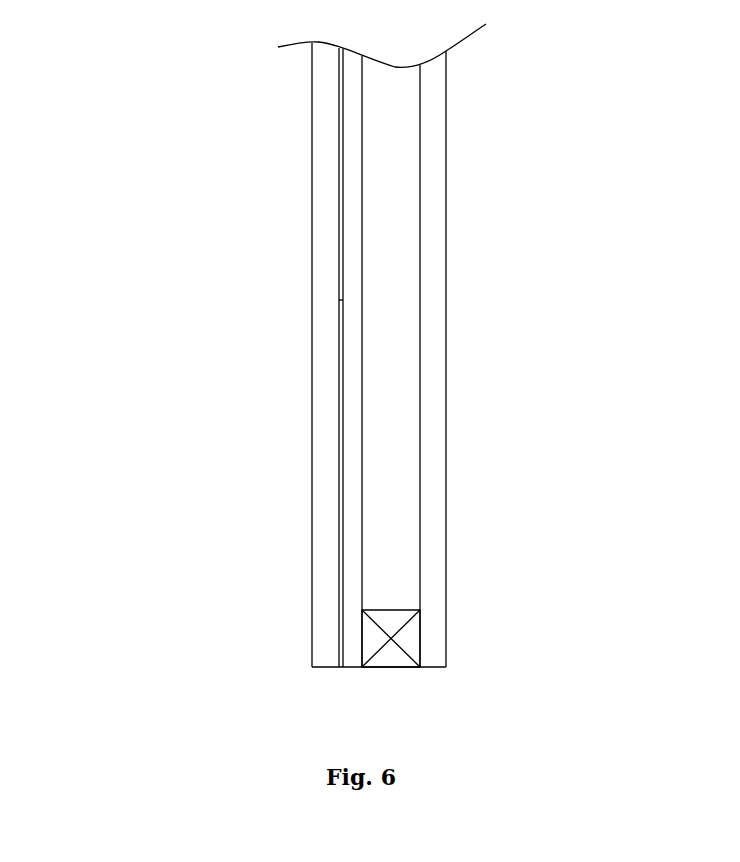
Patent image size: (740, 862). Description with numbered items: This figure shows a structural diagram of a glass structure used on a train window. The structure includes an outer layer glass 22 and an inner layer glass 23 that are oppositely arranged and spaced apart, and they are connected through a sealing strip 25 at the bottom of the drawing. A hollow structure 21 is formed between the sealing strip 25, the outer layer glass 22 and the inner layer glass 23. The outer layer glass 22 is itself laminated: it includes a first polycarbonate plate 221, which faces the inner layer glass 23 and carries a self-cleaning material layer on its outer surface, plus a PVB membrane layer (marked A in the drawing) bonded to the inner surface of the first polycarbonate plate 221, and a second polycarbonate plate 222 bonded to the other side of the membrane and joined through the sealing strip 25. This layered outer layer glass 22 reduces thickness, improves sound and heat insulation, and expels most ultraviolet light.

The hollow structure 21 is at (392, 420).
The outer layer glass 22 is at (221, 293).
The first polycarbonate plate 221 is at (326, 372).
The second polycarbonate plate 222 is at (352, 548).
The inner layer glass 23 is at (432, 545).
The sealing strip 25 is at (410, 629).
The region A is at (340, 455).